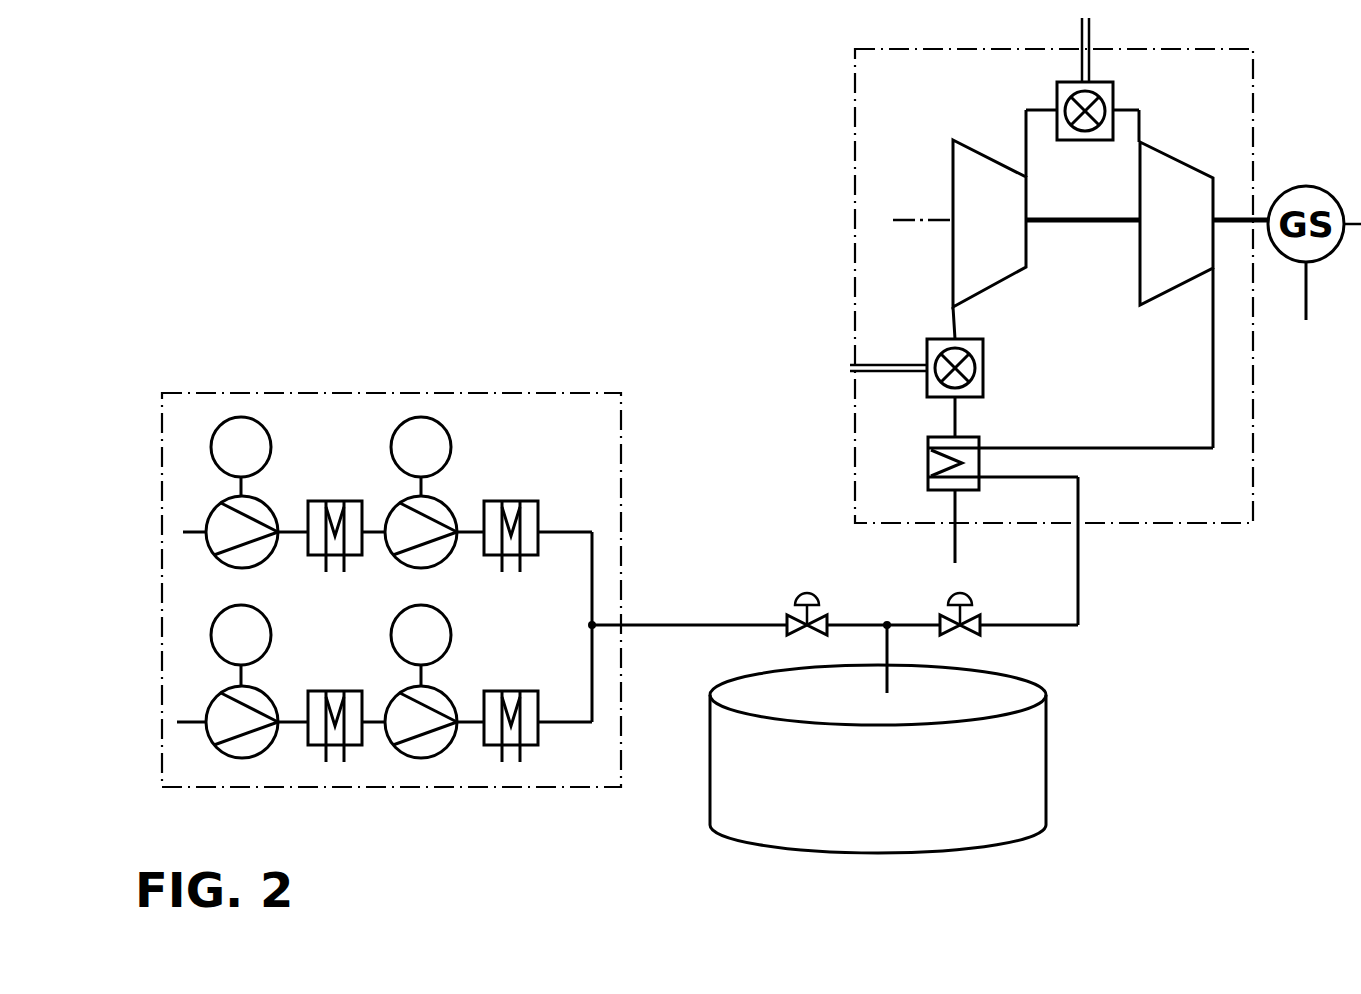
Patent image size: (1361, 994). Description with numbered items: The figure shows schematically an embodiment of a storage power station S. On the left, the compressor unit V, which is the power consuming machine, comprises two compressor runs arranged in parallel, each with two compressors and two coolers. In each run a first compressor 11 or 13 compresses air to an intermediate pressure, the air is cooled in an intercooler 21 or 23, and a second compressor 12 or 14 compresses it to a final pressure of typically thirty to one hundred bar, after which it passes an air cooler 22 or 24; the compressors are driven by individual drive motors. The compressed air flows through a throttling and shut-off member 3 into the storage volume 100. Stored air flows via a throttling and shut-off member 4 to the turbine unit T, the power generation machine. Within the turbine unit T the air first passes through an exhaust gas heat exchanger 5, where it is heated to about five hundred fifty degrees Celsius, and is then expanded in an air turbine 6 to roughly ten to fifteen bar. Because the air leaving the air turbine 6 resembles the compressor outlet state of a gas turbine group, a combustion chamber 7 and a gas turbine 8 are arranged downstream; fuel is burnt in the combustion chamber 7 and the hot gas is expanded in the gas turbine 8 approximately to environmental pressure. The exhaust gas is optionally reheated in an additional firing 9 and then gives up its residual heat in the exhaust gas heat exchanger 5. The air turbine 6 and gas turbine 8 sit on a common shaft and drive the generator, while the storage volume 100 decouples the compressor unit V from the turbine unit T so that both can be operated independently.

The throttling and shut-off member 3 is at (787, 628).
The throttling and shut-off member 4 is at (980, 630).
The exhaust gas heat exchanger 5 is at (928, 442).
The air turbine 6 is at (1162, 238).
The combustion chamber 7 is at (1113, 92).
The gas turbine 8 is at (977, 238).
The additional firing 9 is at (928, 348).
The compressor 11 is at (268, 505).
The compressor 12 is at (448, 505).
The compressor 13 is at (268, 694).
The compressor 14 is at (448, 694).
The intercooler 21 is at (337, 502).
The air cooler 22 is at (513, 502).
The intercooler 23 is at (337, 692).
The air cooler 24 is at (513, 692).
The storage volume 100 is at (852, 812).
The compressor unit V is at (540, 788).
The turbine unit T is at (1253, 485).
The storage power station S is at (718, 482).